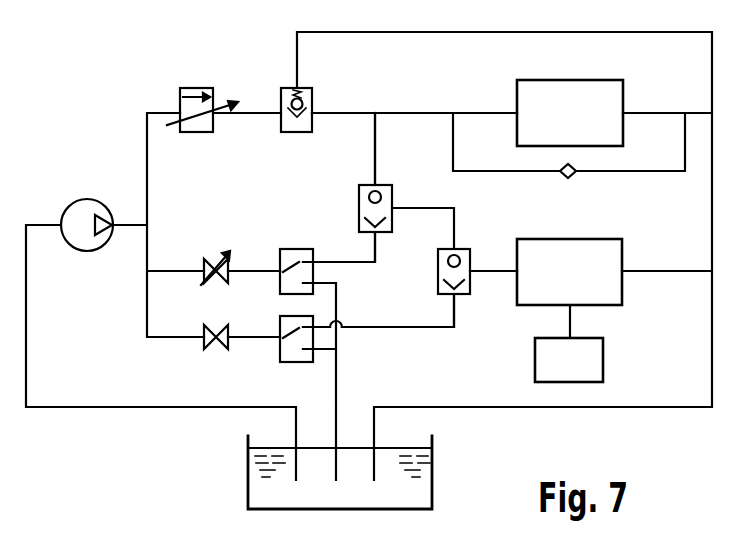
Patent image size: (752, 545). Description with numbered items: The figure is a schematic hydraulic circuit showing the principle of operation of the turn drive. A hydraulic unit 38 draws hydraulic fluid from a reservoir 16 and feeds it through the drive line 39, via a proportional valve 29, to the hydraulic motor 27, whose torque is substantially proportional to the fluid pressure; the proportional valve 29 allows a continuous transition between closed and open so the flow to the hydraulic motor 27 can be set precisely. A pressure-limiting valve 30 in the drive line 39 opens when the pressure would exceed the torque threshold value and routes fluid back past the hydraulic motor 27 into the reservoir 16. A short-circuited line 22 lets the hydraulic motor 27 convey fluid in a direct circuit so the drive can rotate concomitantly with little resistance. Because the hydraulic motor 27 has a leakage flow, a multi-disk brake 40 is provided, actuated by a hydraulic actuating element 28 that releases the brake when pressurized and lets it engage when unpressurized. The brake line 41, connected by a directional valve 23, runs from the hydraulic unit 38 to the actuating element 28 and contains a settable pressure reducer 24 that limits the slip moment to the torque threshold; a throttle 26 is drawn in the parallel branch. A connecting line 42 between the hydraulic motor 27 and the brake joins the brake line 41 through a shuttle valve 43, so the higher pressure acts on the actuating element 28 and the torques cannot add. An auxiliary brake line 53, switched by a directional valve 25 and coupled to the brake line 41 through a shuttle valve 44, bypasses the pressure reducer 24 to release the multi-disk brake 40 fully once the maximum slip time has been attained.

The reservoir 16 is at (248, 476).
The short-circuited line 22 is at (608, 172).
The directional valve 23 is at (290, 249).
The settable pressure reducer 24 is at (215, 262).
The directional valve 25 is at (280, 352).
The throttle valve 26 is at (205, 342).
The hydraulic motor 27 is at (517, 85).
The hydraulic actuating element 28 is at (622, 258).
The proportional valve 29 is at (200, 88).
The pressure-limiting valve 30 is at (293, 88).
The hydraulic unit 38 is at (90, 198).
The drive line 39 is at (347, 112).
The multi-disk brake 40 is at (535, 367).
The brake line 41 is at (360, 262).
The connecting line 42 is at (373, 165).
The shuttle valve 43 is at (395, 190).
The shuttle valve 44 is at (462, 249).
The auxiliary brake line 53 is at (372, 326).